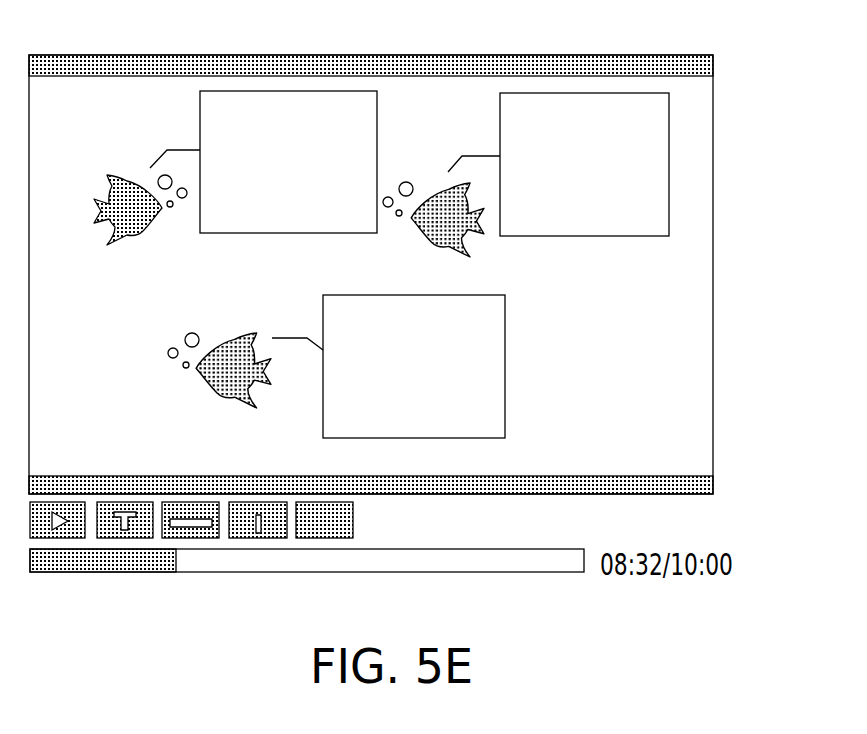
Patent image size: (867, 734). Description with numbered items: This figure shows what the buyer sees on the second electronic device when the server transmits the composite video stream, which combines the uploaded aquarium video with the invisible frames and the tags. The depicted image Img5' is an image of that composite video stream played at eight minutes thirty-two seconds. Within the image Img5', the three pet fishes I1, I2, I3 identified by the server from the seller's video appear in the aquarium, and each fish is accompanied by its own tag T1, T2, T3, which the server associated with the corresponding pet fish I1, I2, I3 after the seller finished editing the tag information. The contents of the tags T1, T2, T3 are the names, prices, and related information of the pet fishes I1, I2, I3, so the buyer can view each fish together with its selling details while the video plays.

The pet fish I1 is at (130, 177).
The pet fish I2 is at (438, 187).
The pet fish I3 is at (240, 333).
The tag T1 is at (285, 91).
The tag T2 is at (585, 93).
The tag T3 is at (505, 363).
The image of the composite video stream Img5' is at (421, 274).